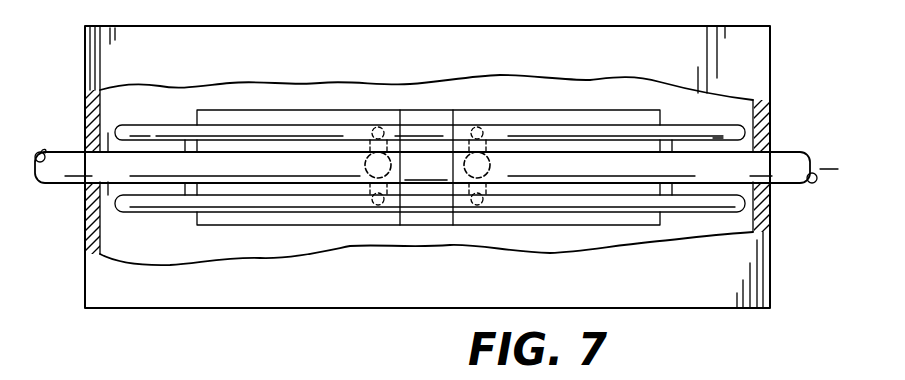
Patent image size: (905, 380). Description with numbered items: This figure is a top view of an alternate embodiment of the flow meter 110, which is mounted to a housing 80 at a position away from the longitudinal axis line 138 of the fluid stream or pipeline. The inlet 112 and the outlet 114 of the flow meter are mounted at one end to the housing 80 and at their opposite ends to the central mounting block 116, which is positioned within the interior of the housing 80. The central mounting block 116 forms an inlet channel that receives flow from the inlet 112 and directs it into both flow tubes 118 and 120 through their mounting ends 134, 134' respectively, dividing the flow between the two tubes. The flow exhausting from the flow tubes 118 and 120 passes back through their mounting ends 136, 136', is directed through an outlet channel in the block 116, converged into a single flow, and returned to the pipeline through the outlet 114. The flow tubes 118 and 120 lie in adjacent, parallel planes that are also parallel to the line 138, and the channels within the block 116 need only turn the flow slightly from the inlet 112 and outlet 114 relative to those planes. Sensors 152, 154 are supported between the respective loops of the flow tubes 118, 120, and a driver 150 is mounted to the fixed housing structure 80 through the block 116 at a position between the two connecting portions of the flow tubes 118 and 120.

The flow meter 110 is at (78, 67).
The housing 80 is at (758, 134).
The inlet 112 is at (163, 163).
The outlet 114 is at (794, 170).
The longitudinal axis line 138 is at (36, 167).
The flow tube 120 is at (267, 128).
The central mounting block 116 is at (578, 118).
The sensor 152 is at (147, 143).
The sensor 154 is at (687, 147).
The flow tube 118 is at (240, 198).
The driver 150 is at (426, 167).
The mounting end 134 is at (379, 225).
The mounting end 136 is at (465, 225).
The mounting end 134' is at (397, 94).
The mounting end 136' is at (481, 94).